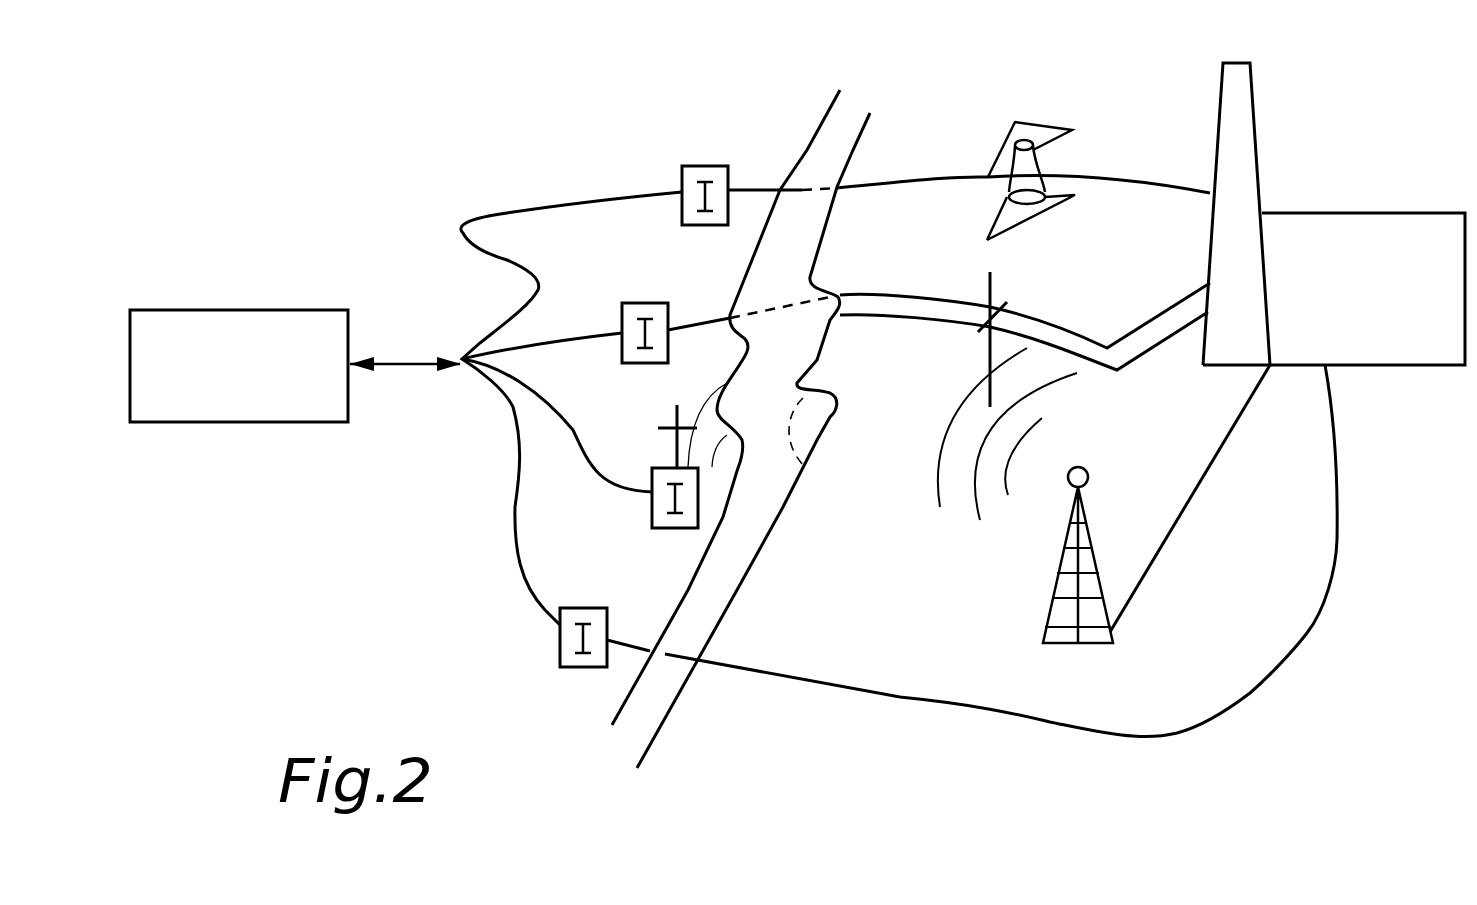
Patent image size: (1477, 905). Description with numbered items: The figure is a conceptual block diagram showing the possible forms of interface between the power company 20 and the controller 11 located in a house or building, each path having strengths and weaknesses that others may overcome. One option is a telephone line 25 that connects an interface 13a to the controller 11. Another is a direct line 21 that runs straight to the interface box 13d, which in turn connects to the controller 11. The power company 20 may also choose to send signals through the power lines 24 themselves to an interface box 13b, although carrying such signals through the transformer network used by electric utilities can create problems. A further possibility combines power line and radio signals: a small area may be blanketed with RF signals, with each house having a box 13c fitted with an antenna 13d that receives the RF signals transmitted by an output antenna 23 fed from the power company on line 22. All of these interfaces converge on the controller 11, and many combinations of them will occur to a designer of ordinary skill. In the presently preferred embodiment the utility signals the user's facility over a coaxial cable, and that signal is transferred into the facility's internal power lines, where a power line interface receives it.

The controller 11 is at (233, 310).
The interface 13a is at (705, 166).
The interface box 13b is at (645, 303).
The box 13c is at (675, 466).
The interface box; antenna 13d is at (676, 422).
The power company 20 is at (1323, 213).
The direct line 21 is at (1307, 633).
The line 22 is at (1170, 522).
The output antenna 23 is at (1090, 547).
The power lines 24 is at (1047, 322).
The telephone line 25 is at (1083, 170).